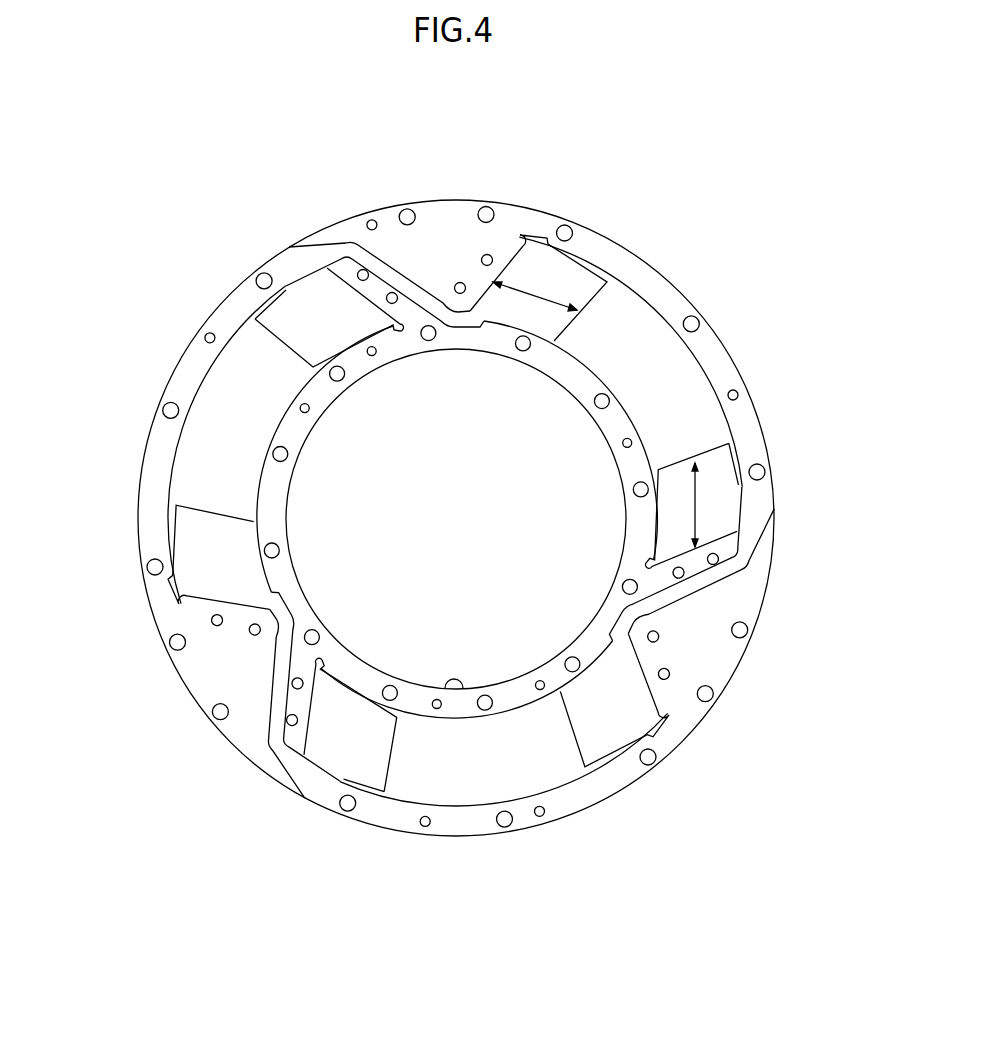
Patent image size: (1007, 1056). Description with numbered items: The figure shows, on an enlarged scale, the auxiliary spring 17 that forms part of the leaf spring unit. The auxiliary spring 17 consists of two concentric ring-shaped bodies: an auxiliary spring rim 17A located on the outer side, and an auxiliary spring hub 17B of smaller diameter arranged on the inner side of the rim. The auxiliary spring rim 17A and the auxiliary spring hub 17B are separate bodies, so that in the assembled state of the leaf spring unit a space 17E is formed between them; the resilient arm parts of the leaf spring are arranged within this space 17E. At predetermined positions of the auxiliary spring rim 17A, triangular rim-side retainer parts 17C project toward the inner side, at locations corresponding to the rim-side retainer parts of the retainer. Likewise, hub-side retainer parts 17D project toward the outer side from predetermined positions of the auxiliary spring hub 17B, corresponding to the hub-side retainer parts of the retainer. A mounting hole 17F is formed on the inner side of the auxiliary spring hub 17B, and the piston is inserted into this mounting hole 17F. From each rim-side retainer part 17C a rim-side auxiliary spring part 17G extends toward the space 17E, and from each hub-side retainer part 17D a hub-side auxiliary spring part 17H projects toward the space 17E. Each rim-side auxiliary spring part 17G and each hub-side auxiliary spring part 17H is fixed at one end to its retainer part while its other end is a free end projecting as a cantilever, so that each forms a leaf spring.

The auxiliary spring 17 is at (684, 122).
The auxiliary spring rim 17A is at (723, 365).
The auxiliary spring hub 17B is at (610, 427).
The rim-side retainer part 17C is at (470, 286).
The hub-side retainer part 17D is at (380, 278).
The space 17E is at (637, 320).
The mounting hole 17F is at (463, 690).
The rim-side auxiliary spring part 17G is at (580, 283).
The hub-side auxiliary spring part 17H is at (317, 307).